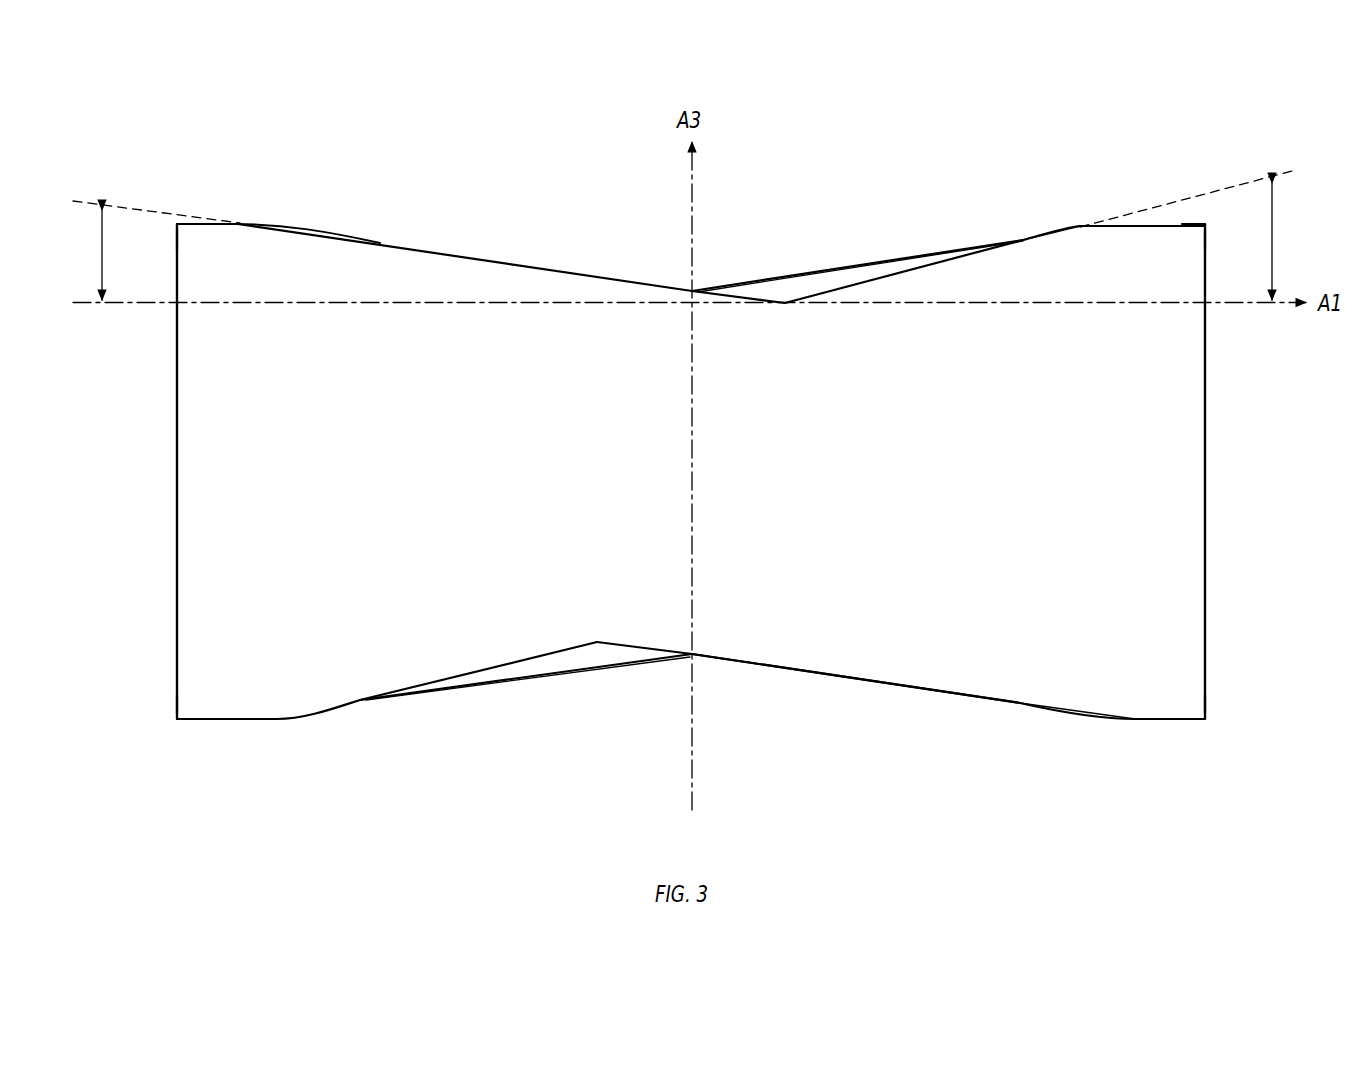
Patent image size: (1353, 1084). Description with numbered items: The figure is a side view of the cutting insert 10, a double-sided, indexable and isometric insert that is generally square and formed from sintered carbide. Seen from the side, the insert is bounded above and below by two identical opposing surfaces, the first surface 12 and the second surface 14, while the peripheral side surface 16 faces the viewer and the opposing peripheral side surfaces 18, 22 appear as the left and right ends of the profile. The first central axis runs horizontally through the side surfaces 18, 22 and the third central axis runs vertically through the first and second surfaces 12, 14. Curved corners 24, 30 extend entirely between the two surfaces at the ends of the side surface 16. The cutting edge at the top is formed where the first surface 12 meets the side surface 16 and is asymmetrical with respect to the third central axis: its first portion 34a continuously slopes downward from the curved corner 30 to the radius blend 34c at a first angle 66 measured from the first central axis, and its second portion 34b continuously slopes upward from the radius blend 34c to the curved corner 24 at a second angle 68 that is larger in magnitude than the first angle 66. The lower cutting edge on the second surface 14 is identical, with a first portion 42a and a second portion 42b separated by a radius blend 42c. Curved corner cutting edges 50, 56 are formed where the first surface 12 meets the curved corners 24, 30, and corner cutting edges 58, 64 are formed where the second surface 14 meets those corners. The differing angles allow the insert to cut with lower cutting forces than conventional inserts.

The cutting insert 10 is at (683, 444).
The first surface 12 is at (691, 218).
The second surface 14 is at (691, 716).
The peripheral side surface 16 is at (856, 704).
The peripheral side surface 18 is at (1249, 471).
The peripheral side surface 22 is at (134, 471).
The curved corner 24 is at (1245, 471).
The curved corner 30 is at (138, 471).
The first portion 34a is at (434, 240).
The second portion 34b is at (948, 222).
The radius blend 34c is at (857, 246).
The first portion 42a is at (948, 715).
The second portion 42b is at (434, 705).
The radius blend 42c is at (644, 686).
The corner cutting edge 50 is at (1217, 242).
The corner cutting edge 56 is at (166, 238).
The corner cutting edge 58 is at (1222, 732).
The corner cutting edge 64 is at (161, 732).
The first angle 66 is at (156, 250).
The second angle 68 is at (1186, 235).